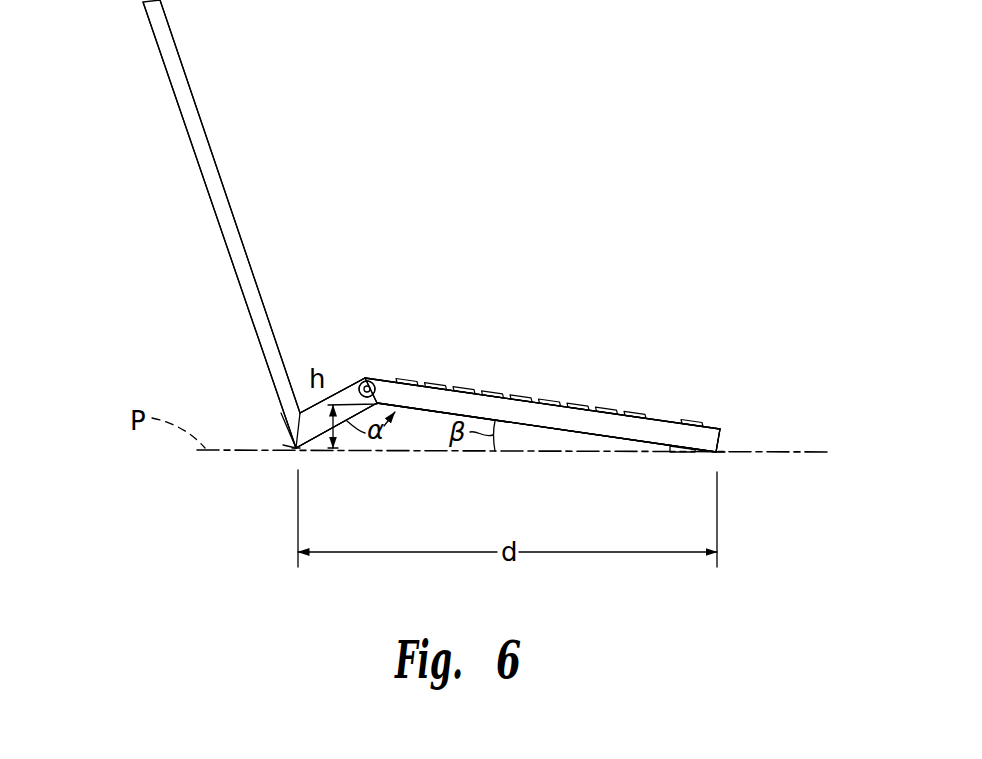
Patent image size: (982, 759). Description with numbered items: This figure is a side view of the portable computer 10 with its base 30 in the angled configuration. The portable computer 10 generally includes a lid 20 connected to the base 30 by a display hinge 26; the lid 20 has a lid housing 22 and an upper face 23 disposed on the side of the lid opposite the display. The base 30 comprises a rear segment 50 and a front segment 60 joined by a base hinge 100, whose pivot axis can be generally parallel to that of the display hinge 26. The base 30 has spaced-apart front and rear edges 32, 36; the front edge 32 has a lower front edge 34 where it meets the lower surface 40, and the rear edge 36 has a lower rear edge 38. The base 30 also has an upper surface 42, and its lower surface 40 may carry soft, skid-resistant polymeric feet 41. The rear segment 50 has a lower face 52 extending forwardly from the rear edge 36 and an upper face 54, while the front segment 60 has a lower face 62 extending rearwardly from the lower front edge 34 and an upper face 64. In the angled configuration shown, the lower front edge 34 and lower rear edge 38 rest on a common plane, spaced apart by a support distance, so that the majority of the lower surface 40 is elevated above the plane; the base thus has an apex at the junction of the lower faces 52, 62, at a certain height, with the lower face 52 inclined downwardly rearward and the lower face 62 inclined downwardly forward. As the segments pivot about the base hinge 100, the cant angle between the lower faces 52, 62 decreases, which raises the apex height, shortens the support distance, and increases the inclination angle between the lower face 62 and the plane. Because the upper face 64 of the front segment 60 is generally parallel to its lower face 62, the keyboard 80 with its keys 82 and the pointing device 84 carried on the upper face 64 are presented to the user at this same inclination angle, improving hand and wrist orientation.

The portable computer 10 is at (618, 268).
The lid 20 is at (215, 222).
The lid housing 22 is at (197, 124).
The upper face 23 is at (170, 87).
The display hinge 26 is at (289, 415).
The base 30 is at (440, 380).
The front edge 32 is at (723, 440).
The lower front edge 34 is at (722, 455).
The rear edge 36 is at (283, 448).
The lower rear edge 38 is at (296, 452).
The lower surface 40 is at (523, 412).
The feet 41 is at (328, 450).
The upper surface 42 is at (352, 372).
The rear segment 50 is at (308, 409).
The lower face 52 is at (342, 423).
The upper face 54 is at (332, 406).
The front segment 60 is at (447, 407).
The lower face 62 is at (573, 438).
The upper face 64 is at (380, 386).
The keyboard 80 is at (602, 400).
The keys 82 is at (571, 404).
The pointing device 84 is at (660, 417).
The base hinge 100 is at (375, 380).